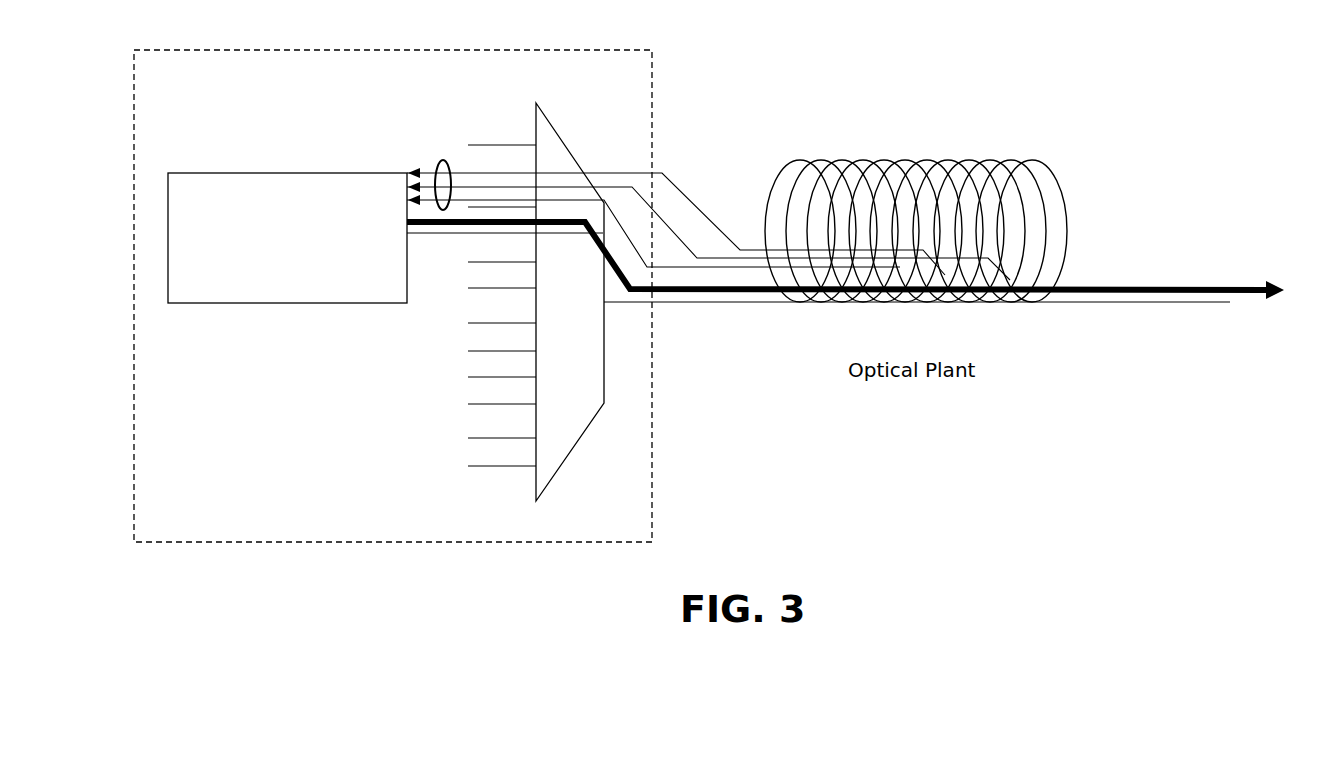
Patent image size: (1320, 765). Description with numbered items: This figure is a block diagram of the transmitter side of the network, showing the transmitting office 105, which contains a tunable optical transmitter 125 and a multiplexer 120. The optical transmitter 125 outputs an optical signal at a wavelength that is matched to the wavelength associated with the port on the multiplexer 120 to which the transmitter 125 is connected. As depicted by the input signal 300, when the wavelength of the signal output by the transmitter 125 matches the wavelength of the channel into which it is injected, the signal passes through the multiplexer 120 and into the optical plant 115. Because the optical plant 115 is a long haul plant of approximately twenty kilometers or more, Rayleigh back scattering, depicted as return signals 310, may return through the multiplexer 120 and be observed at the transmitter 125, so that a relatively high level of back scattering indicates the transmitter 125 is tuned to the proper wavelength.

The transmitting office 105 is at (393, 296).
The optical transmitter 125 is at (228, 182).
The multiplexer 120 is at (545, 145).
The return signals 310 is at (445, 160).
The input signal 300 is at (463, 222).
The optical plant 115 is at (885, 182).